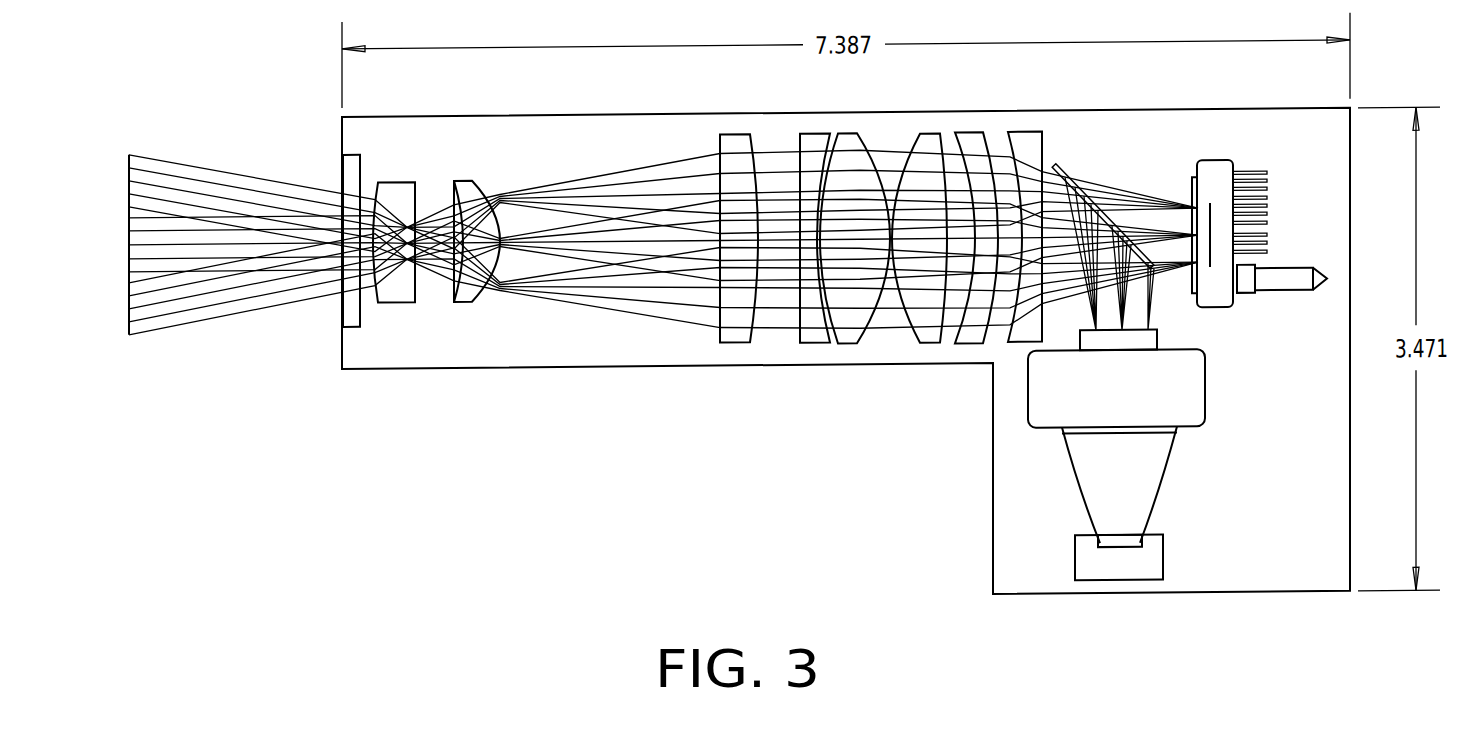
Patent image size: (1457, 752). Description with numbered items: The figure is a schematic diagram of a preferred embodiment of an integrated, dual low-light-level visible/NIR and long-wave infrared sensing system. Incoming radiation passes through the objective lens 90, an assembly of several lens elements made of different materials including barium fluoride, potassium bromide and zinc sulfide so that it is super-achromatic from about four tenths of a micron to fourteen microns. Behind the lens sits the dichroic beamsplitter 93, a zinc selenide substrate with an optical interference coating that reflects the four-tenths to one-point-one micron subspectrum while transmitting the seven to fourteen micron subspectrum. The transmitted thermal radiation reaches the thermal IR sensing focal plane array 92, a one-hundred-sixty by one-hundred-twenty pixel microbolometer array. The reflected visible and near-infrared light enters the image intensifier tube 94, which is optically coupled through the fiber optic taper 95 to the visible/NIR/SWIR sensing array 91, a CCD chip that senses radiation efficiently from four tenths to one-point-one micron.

The objective lens 90 is at (643, 356).
The visible/NIR/SWIR sensing array 91 is at (1165, 573).
The thermal IR sensing focal plane array 92 is at (1217, 312).
The dichroic beamsplitter 93 is at (1061, 178).
The image intensifier tube 94 is at (1194, 404).
The fiber optic taper 95 is at (1163, 486).